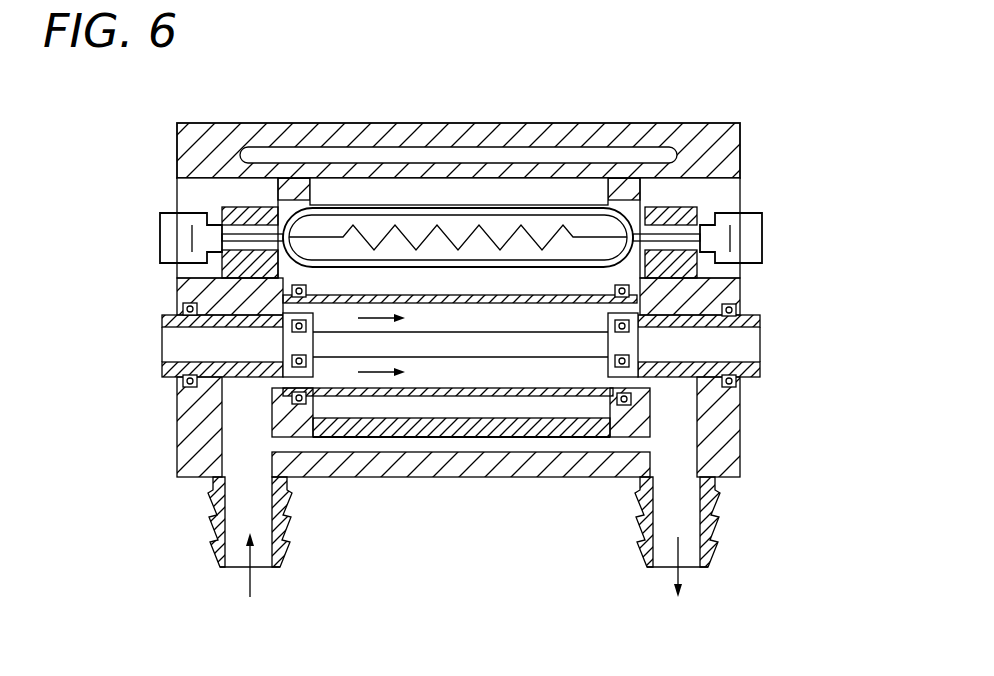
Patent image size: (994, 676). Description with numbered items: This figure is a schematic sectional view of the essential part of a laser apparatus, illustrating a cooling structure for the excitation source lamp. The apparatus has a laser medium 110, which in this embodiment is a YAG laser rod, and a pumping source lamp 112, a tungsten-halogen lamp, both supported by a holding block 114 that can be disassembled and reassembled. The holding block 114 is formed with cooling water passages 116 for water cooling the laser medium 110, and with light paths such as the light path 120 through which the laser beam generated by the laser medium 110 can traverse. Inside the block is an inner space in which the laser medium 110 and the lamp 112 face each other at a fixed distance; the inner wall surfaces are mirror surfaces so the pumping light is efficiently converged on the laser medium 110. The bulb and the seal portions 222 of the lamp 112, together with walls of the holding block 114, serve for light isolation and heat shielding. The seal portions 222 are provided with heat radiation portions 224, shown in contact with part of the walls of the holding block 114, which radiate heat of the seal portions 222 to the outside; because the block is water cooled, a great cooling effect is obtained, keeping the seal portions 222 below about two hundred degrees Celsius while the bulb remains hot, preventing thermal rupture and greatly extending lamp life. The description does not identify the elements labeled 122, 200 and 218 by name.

The laser medium 110 is at (633, 343).
The pumping source lamp 112 is at (556, 198).
The holding block 114 is at (752, 441).
The cooling water passages 116 is at (452, 318).
The light path 120 is at (750, 355).
The reflecting surface 122 is at (488, 187).
The lamp 200 is at (355, 207).
The left pipe 218 is at (170, 340).
The seal portions 222 is at (218, 222).
The heat radiation portions 224 is at (226, 264).